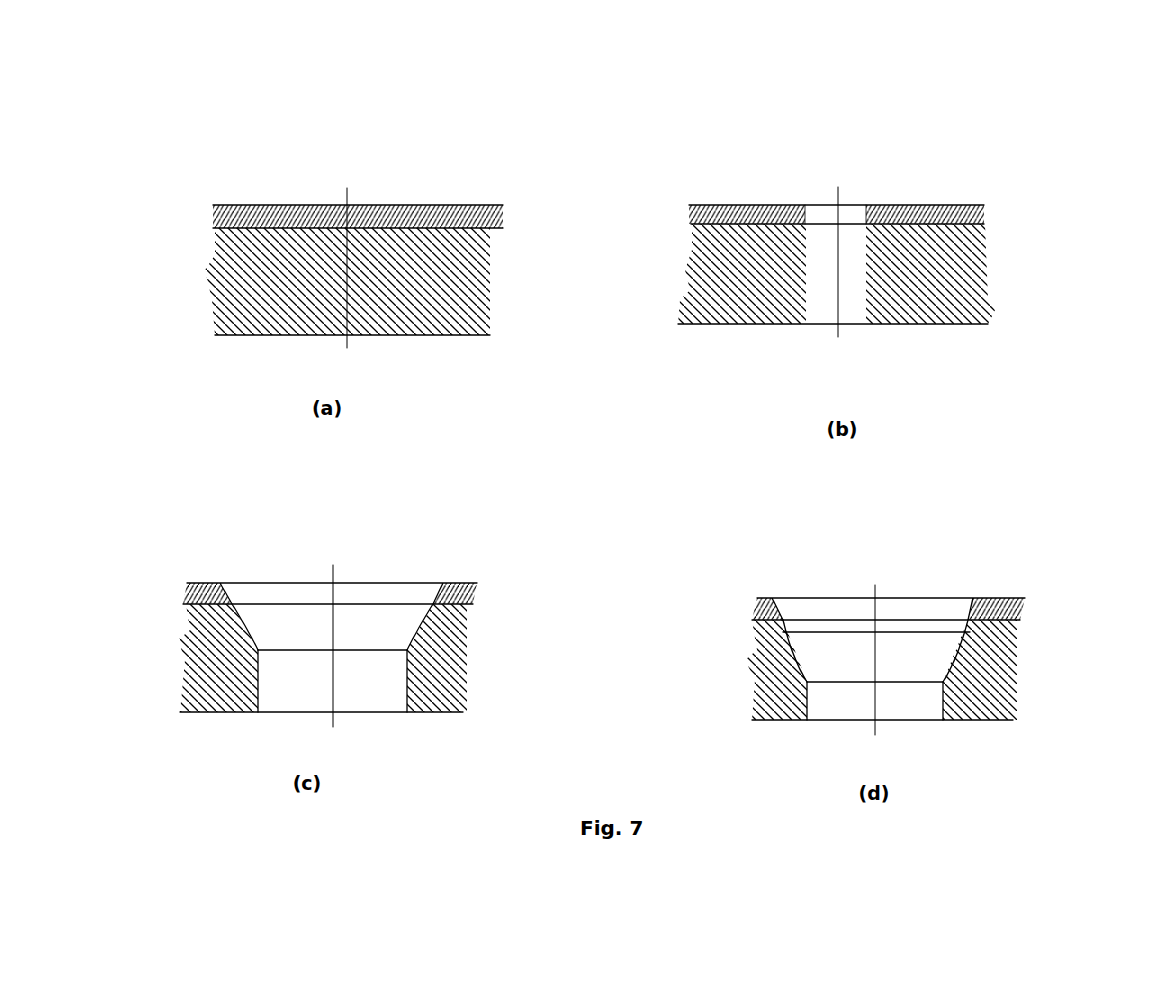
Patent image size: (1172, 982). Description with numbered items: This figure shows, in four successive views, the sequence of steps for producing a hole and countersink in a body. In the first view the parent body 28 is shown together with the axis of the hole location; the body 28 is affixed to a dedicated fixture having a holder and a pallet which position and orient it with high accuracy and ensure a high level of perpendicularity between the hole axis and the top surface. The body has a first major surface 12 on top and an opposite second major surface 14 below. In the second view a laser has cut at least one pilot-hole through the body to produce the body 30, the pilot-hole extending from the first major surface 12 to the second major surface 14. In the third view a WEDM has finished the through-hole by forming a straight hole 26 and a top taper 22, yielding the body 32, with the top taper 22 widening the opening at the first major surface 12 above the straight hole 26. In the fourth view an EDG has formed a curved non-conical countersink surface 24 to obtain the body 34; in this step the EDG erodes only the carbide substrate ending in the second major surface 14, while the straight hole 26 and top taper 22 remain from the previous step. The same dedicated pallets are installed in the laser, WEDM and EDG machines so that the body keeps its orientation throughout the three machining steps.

The first major surface 12 is at (464, 200).
The second major surface 14 is at (243, 337).
The top taper 22 is at (250, 603).
The curved non-conical countersink surface 24 is at (949, 653).
The straight hole 26 is at (270, 668).
The body 28 is at (381, 183).
The body with pilot-hole 30 is at (816, 176).
The body with straight hole and top taper 32 is at (320, 550).
The body with countersink 34 is at (862, 574).